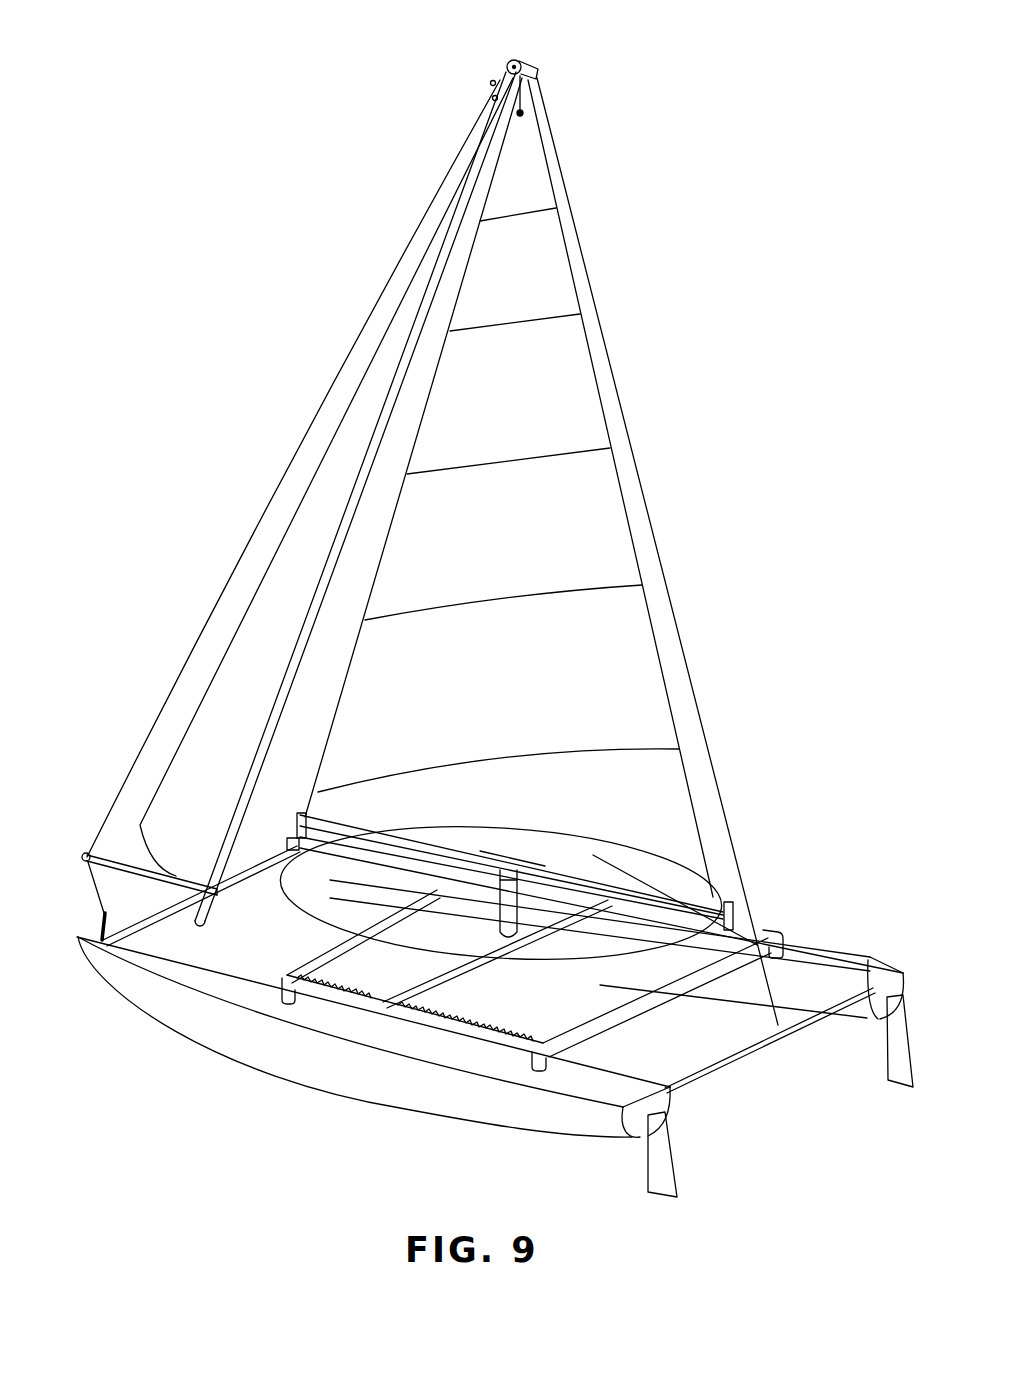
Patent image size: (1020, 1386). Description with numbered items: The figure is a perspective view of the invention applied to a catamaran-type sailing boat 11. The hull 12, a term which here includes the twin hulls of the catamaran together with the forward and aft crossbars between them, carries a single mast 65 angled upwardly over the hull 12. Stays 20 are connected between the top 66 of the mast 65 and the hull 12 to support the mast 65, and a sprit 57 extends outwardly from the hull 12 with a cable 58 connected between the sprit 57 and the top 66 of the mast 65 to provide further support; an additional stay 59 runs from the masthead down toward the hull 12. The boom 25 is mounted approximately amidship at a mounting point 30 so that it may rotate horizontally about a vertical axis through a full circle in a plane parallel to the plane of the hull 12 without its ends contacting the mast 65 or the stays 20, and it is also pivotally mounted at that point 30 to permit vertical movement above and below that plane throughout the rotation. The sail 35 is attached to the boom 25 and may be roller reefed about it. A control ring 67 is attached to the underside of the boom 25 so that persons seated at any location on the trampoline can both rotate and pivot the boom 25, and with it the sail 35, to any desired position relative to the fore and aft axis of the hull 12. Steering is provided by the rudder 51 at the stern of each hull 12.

The catamaran sailboat 11 is at (220, 1102).
The hull 12 is at (818, 957).
The stays 20 is at (178, 712).
The boom 25 is at (718, 900).
The point at which the boom is rotatably mounted 30 is at (495, 902).
The sail 35 is at (600, 540).
The rudder 51 is at (658, 1163).
The sprit 57 is at (178, 860).
The cable 58 is at (207, 620).
The shroud 59 is at (700, 700).
The mast 65 is at (390, 397).
The top of the mast 66 is at (528, 73).
The control ring 67 is at (310, 925).